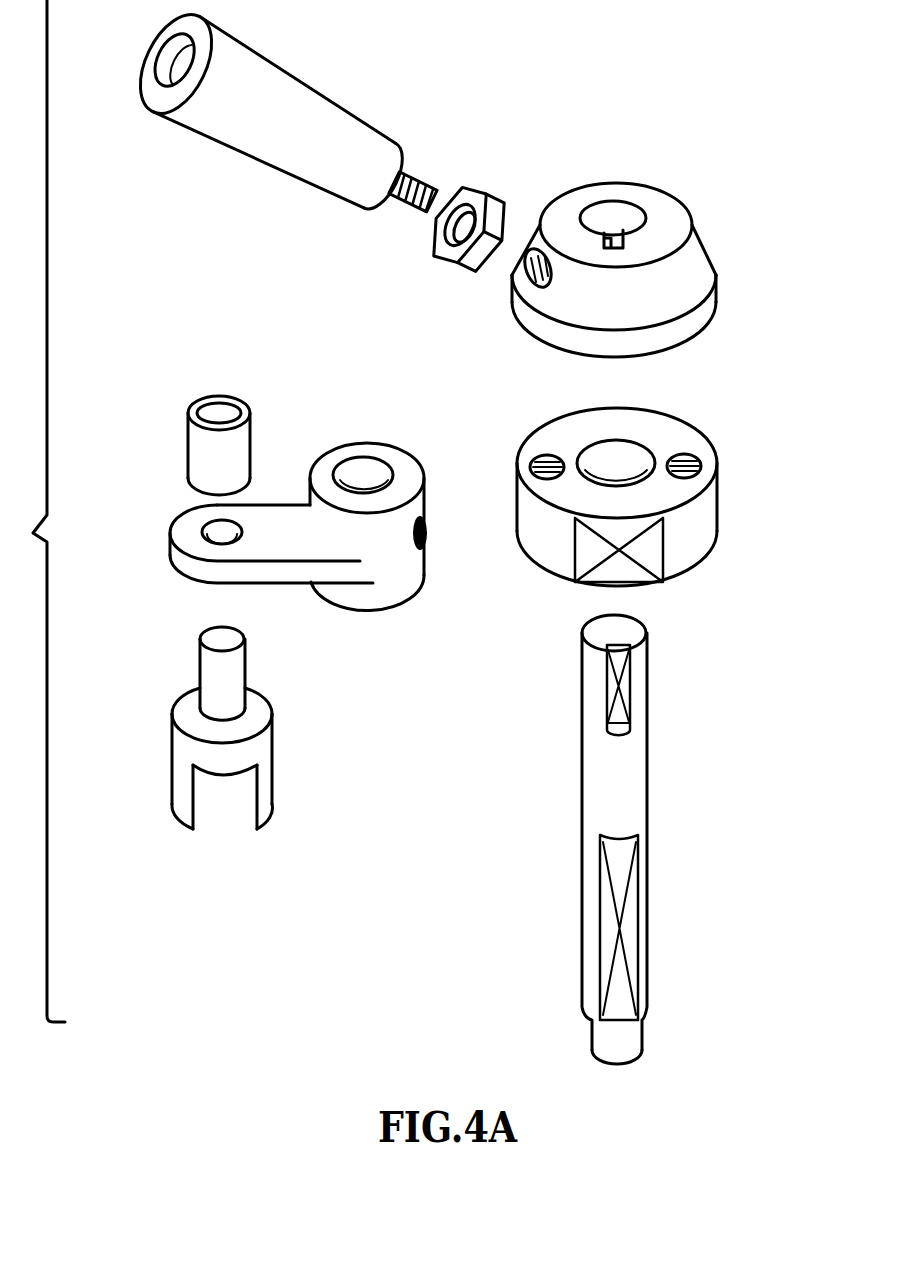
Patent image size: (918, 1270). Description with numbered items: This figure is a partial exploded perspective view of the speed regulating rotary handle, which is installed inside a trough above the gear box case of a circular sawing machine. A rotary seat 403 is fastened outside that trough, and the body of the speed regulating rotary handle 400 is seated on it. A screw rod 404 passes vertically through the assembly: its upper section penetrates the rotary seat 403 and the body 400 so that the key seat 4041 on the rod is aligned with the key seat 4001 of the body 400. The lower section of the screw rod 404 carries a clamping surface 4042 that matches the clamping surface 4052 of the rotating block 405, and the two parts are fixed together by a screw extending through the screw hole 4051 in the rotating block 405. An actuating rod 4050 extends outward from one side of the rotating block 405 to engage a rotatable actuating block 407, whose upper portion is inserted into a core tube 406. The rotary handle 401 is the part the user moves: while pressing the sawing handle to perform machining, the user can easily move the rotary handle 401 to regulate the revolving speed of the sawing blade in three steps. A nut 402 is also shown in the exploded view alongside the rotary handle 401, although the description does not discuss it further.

The body of the speed regulating rotary handle 400 is at (642, 248).
The key seat 4001 is at (647, 223).
The rotary handle 401 is at (356, 132).
The nut 402 is at (498, 216).
The rotary seat 403 is at (683, 442).
The screw rod 404 is at (684, 839).
The key seat 4041 is at (625, 698).
The clamping surface 4042 is at (632, 924).
The rotating block 405 is at (288, 501).
The actuating rod 4050 is at (263, 540).
The screw hole 4051 is at (470, 543).
The clamping surface 4052 is at (384, 470).
The core tube 406 is at (238, 453).
The rotatable actuating block 407 is at (272, 745).